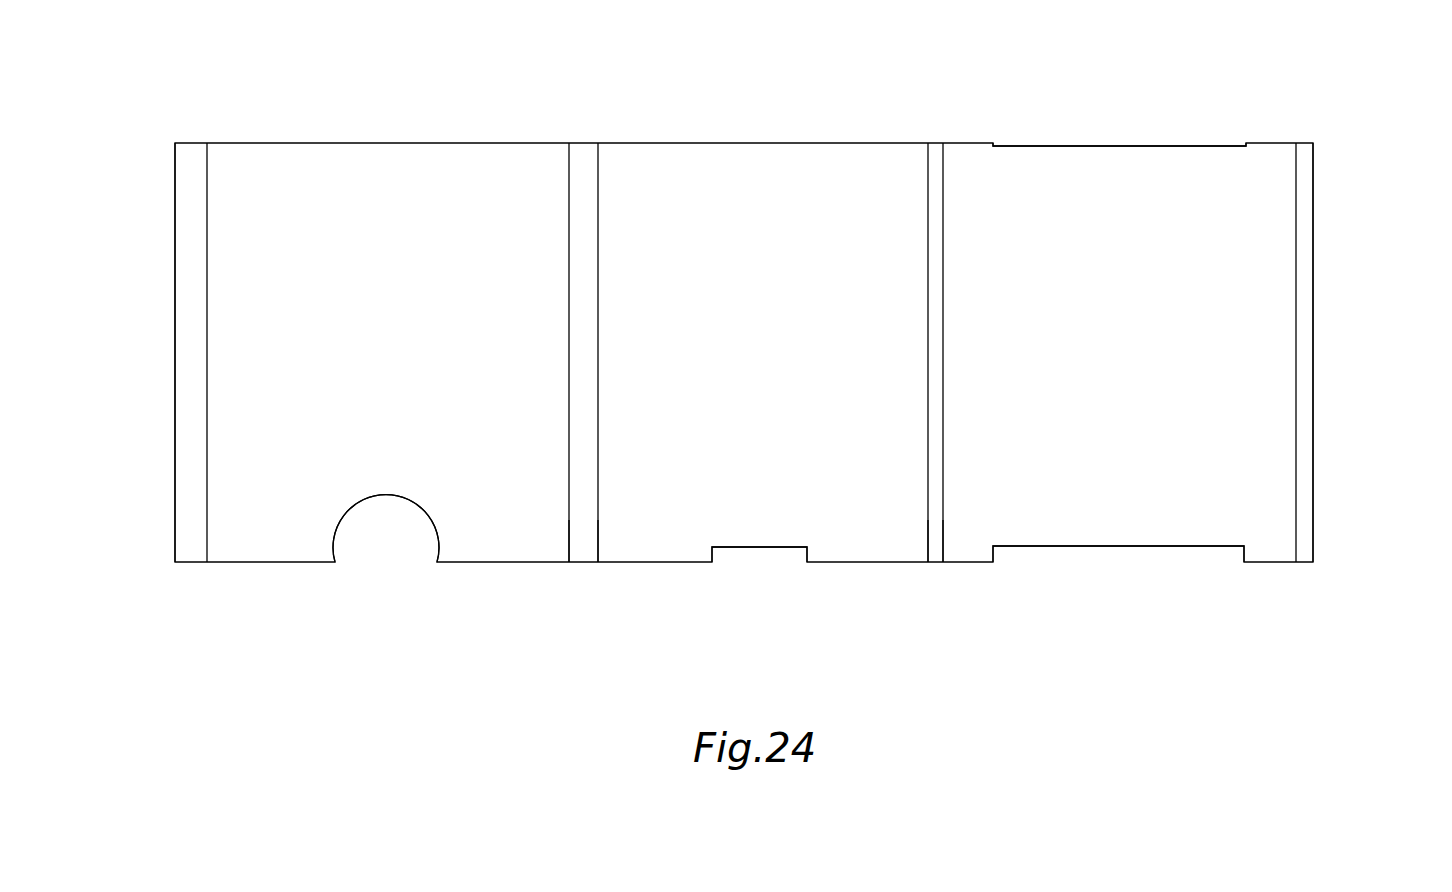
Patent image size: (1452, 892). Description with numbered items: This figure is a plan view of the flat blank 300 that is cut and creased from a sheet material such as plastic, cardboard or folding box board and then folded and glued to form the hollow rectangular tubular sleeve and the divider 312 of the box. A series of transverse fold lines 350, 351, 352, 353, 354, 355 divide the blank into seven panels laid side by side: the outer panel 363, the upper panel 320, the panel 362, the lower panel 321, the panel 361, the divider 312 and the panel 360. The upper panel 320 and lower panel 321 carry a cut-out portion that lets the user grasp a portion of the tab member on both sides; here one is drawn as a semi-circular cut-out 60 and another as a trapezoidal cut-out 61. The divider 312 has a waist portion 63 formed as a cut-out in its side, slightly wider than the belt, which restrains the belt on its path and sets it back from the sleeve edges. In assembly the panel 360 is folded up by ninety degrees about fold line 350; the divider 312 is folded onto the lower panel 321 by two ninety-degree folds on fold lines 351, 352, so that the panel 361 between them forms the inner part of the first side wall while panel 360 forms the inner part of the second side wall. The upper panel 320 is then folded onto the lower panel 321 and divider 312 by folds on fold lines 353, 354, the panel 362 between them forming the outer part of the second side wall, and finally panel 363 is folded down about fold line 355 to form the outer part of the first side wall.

The blank 300 is at (477, 586).
The upper panel 320 is at (358, 357).
The lower panel 321 is at (743, 357).
The divider 312 is at (1102, 357).
The fold line 355 is at (207, 202).
The fold line 354 is at (569, 202).
The fold line 353 is at (598, 202).
The fold line 351 is at (928, 198).
The fold line 352 is at (944, 200).
The fold line 350 is at (1296, 198).
The waist portion 63 is at (1092, 144).
The panel 360 is at (1310, 508).
The panel 363 is at (190, 537).
The semi-circular cut-out 60 is at (388, 527).
The panel 362 is at (584, 533).
The trapezoidal cut-out 61 is at (762, 548).
The panel 361 is at (934, 533).